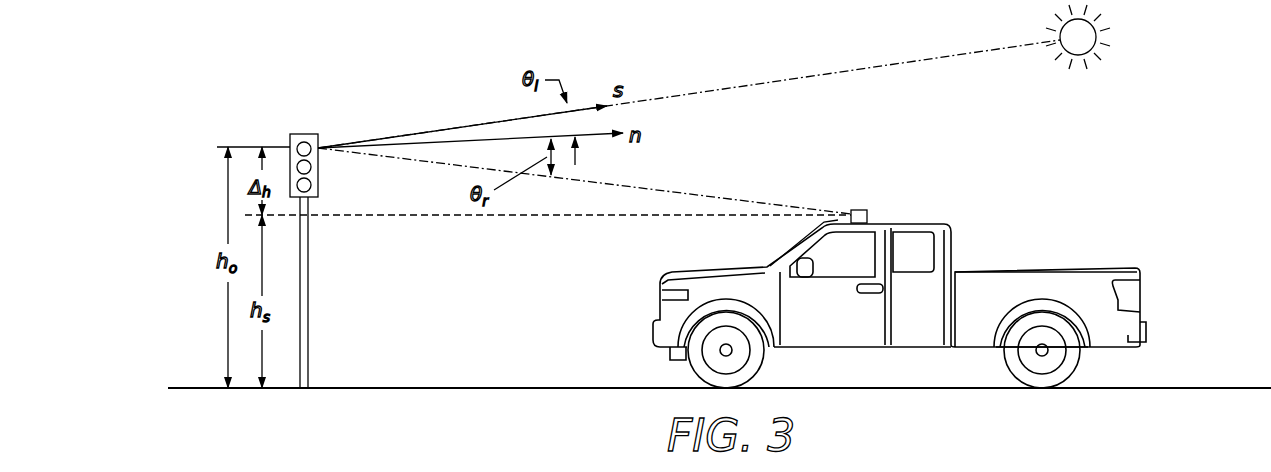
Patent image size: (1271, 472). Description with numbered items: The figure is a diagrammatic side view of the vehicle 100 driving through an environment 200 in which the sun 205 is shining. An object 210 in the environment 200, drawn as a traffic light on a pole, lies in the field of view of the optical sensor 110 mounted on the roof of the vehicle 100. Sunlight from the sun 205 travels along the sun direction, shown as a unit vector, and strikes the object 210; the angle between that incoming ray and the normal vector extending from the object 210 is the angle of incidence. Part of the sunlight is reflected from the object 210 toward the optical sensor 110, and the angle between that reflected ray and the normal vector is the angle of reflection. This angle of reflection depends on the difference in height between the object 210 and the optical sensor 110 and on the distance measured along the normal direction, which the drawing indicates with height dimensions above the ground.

The vehicle 100 is at (1141, 290).
The optical sensor 110 is at (853, 210).
The environment 200 is at (1245, 58).
The sun 205 is at (1068, 62).
The object 210 is at (292, 134).